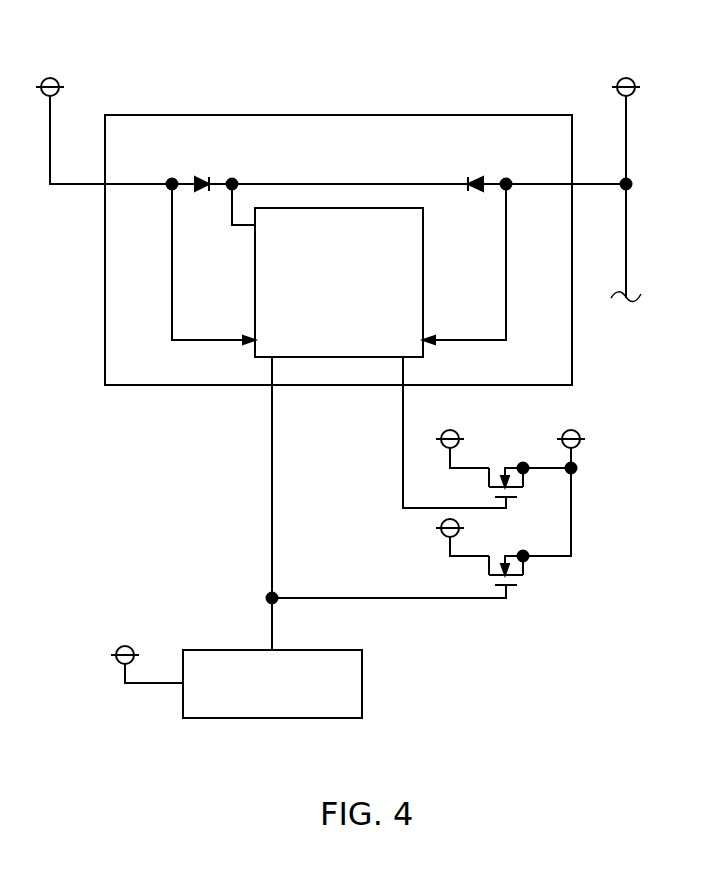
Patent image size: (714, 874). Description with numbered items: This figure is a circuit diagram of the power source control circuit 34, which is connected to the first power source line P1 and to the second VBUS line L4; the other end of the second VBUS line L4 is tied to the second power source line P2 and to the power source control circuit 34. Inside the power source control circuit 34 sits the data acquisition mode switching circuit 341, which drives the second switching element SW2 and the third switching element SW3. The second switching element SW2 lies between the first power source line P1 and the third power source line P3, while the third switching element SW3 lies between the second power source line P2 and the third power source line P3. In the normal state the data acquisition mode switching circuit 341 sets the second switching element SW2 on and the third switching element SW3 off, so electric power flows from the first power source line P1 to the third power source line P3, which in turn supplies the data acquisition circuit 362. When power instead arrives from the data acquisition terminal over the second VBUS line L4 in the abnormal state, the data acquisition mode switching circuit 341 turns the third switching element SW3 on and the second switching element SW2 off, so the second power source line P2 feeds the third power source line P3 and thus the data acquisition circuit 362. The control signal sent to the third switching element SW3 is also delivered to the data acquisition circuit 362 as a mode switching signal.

The power source control circuit 34 is at (560, 114).
The data acquisition mode switching circuit 341 is at (423, 247).
The data acquisition circuit 362 is at (362, 670).
The second VBUS line L4 is at (626, 237).
The first power source line P1 is at (47, 78).
The second power source line P2 is at (633, 79).
The third power source line P3 is at (580, 434).
The second switching element SW2 is at (508, 458).
The third switching element SW3 is at (508, 551).